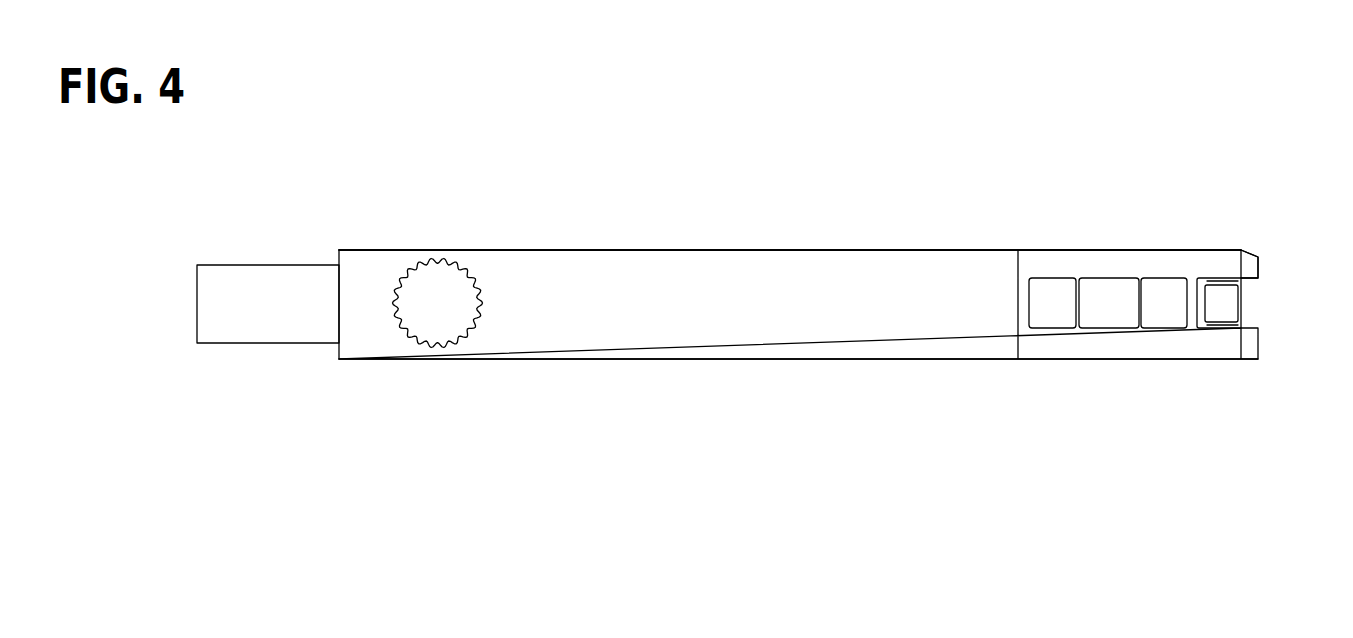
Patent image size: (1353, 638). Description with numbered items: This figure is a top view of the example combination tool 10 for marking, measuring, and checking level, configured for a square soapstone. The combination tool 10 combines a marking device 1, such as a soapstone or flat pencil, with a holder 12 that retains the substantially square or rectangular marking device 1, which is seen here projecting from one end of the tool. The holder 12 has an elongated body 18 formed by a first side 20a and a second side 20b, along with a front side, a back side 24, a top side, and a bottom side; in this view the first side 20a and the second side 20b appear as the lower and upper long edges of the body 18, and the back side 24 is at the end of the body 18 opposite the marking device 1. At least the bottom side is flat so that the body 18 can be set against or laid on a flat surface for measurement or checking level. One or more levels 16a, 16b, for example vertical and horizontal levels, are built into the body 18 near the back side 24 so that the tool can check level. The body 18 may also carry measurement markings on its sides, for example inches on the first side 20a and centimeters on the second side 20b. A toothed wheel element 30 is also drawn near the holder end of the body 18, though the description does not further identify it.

The combination tool 10 is at (1108, 203).
The marking device 1 is at (258, 265).
The holder 12 is at (350, 250).
The adjustment dial / wheel 30 is at (450, 270).
The second side 20b is at (642, 250).
The body 18 is at (850, 250).
The first side 20a is at (647, 360).
The level 16a is at (1080, 278).
The level 16b is at (1236, 304).
The back side 24 is at (1260, 267).